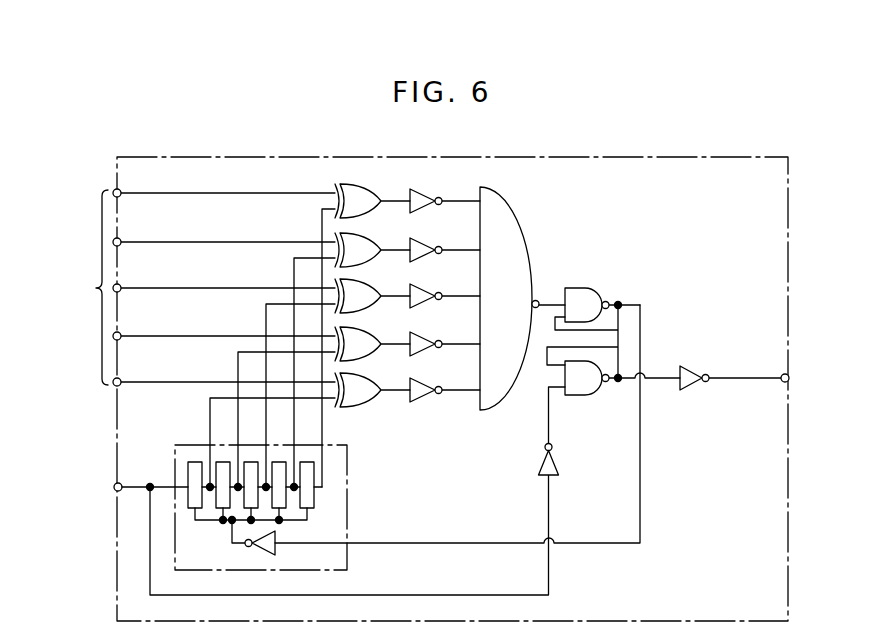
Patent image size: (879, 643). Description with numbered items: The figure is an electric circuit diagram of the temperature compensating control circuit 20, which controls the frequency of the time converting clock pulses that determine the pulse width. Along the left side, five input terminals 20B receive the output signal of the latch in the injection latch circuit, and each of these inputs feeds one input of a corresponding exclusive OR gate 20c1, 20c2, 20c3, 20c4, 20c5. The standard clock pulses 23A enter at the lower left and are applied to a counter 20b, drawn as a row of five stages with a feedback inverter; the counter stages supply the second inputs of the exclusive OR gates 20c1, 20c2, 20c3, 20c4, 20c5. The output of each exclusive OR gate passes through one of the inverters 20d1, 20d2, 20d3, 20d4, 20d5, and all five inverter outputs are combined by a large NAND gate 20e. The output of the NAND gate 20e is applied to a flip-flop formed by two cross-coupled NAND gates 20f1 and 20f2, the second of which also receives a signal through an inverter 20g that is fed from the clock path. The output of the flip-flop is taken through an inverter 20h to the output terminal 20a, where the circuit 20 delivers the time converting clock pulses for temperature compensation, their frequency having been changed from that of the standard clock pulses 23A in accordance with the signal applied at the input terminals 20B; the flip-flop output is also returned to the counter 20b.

The temperature compensating control circuit 20 is at (635, 157).
The input terminals 20B is at (88, 287).
The output terminal 20a is at (785, 374).
The counter 20b is at (348, 517).
The exclusive OR gate 20c1 is at (351, 191).
The exclusive OR gate 20c2 is at (351, 240).
The exclusive OR gate 20c3 is at (351, 286).
The exclusive OR gate 20c4 is at (351, 334).
The exclusive OR gate 20c5 is at (351, 380).
The inverter 20d1 is at (419, 191).
The inverter 20d2 is at (419, 240).
The inverter 20d3 is at (419, 286).
The inverter 20d4 is at (419, 334).
The inverter 20d5 is at (419, 380).
The NAND gate 20e is at (521, 231).
The NAND gate 20f1 is at (583, 287).
The NAND gate 20f2 is at (583, 395).
The inverter 20g is at (557, 470).
The inverter 20h is at (693, 390).
The standard clock pulses 23A is at (118, 490).